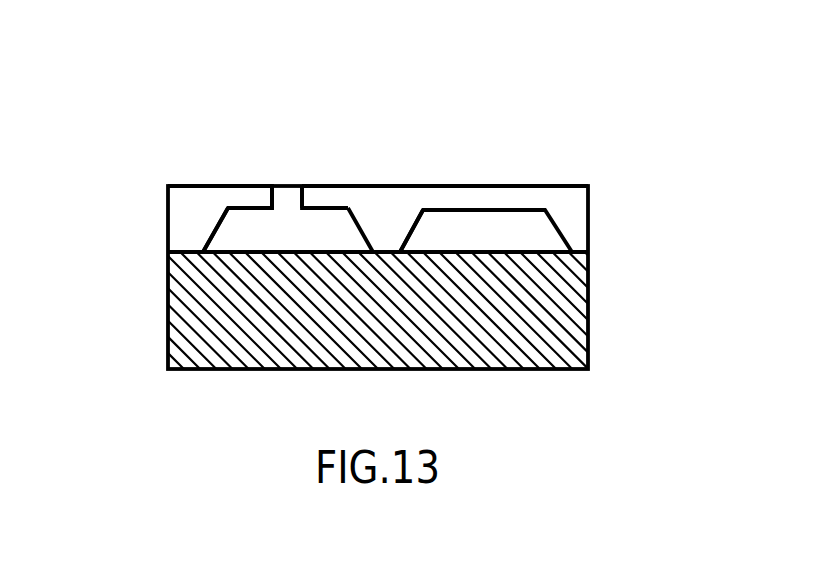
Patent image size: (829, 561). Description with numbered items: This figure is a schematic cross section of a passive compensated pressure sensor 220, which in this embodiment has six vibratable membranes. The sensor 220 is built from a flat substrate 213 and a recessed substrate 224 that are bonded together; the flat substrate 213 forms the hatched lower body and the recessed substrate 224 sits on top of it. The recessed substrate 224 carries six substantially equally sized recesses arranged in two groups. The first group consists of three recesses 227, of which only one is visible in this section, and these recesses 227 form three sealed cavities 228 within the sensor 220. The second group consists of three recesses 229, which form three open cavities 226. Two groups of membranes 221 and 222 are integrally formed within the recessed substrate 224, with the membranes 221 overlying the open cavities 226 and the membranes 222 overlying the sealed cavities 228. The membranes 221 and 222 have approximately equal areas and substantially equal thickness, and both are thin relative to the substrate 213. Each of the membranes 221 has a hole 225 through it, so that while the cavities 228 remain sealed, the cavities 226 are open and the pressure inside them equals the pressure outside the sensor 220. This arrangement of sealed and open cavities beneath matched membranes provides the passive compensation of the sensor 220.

The passive compensated pressure sensor 220 is at (604, 110).
The flat substrate 213 is at (185, 310).
The recessed substrate 224 is at (182, 225).
The open cavities 226 is at (235, 235).
The membranes 221 is at (263, 197).
The hole 225 is at (287, 200).
The membranes 222 is at (525, 202).
The recesses 229 is at (355, 232).
The recesses 227 is at (410, 232).
The sealed cavities 228 is at (523, 237).